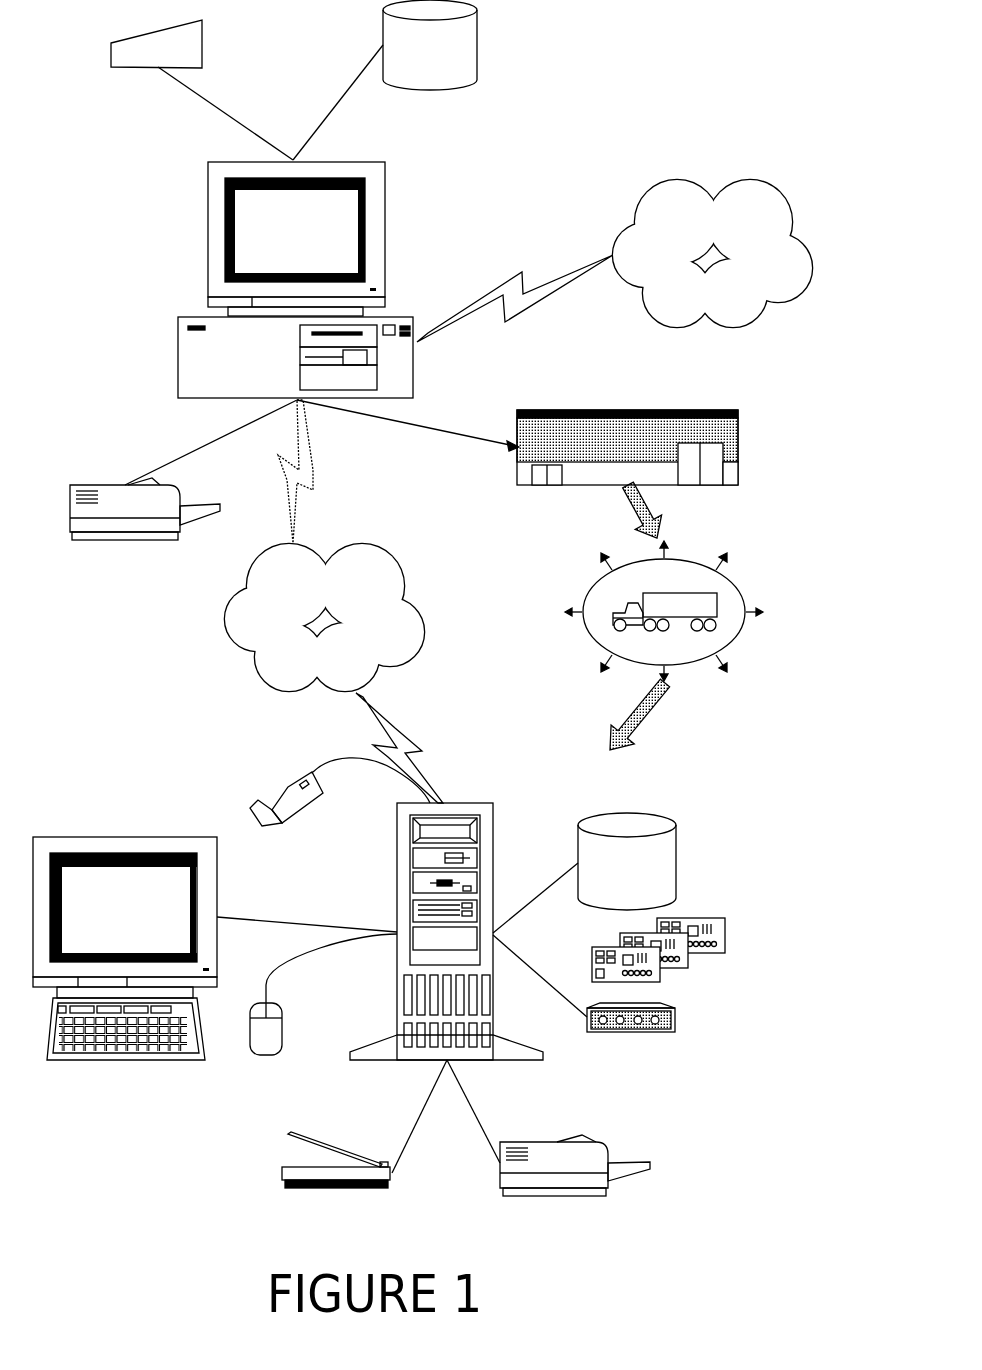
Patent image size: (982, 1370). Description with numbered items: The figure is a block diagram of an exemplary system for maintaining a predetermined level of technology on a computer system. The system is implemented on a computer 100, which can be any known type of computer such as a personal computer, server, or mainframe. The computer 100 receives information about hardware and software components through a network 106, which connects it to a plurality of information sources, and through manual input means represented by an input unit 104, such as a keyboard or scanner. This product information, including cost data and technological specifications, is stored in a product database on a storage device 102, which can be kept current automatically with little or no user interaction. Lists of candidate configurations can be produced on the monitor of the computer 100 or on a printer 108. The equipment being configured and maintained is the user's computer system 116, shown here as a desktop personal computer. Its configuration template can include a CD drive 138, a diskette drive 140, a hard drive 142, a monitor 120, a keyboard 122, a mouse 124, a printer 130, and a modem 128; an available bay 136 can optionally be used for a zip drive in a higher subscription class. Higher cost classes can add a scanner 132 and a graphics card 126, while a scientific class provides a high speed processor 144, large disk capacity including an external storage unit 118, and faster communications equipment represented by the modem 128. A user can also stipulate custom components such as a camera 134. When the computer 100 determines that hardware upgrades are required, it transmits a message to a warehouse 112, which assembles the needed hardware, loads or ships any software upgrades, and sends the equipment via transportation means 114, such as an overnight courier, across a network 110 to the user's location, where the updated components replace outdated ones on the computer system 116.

The computer 100 is at (387, 207).
The storage device 102 is at (478, 43).
The input unit 104 is at (205, 42).
The network 106 is at (740, 180).
The printer 108 is at (123, 485).
The network 110 is at (342, 543).
The warehouse 112 is at (738, 445).
The transportation means 114 is at (730, 575).
The computer system 116 is at (444, 911).
The external storage unit 118 is at (660, 813).
The monitor 120 is at (137, 837).
The keyboard 122 is at (153, 1060).
The mouse 124 is at (280, 1033).
The graphics card 126 is at (725, 935).
The modem 128 is at (675, 1015).
The printer 130 is at (557, 1142).
The scanner 132 is at (322, 1145).
The camera 134 is at (297, 772).
The available bay 136 is at (468, 838).
The CD drive 138 is at (428, 858).
The diskette drive 140 is at (468, 883).
The hard drive 142 is at (425, 910).
The high speed processor 144 is at (468, 937).